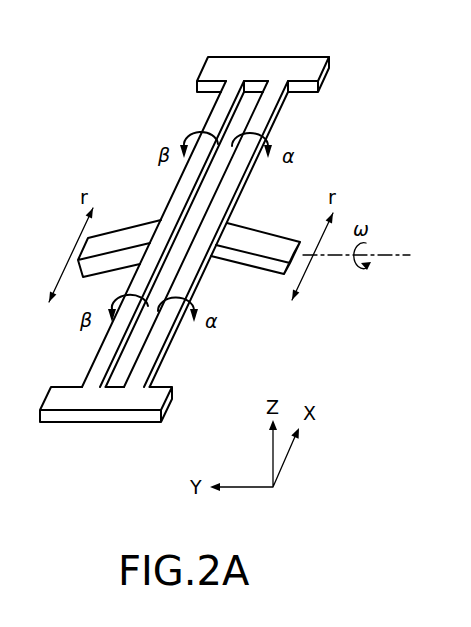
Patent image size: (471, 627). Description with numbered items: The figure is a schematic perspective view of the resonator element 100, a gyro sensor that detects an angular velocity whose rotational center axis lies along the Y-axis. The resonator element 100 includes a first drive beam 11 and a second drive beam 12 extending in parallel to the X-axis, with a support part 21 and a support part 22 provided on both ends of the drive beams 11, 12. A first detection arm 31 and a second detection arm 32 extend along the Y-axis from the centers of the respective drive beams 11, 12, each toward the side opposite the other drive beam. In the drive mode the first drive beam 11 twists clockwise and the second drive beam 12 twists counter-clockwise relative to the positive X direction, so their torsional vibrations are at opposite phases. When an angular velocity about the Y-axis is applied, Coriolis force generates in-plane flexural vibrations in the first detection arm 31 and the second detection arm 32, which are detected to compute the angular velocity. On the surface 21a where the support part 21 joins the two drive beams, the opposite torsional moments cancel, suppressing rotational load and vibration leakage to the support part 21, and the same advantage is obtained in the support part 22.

The resonator element 100 is at (110, 67).
The support part 21 is at (268, 67).
The surface 21a is at (313, 88).
The second drive beam 12 is at (216, 119).
The first drive beam 11 is at (262, 120).
The support part 22 is at (97, 402).
The second detection arm 32 is at (130, 240).
The first detection arm 31 is at (274, 243).